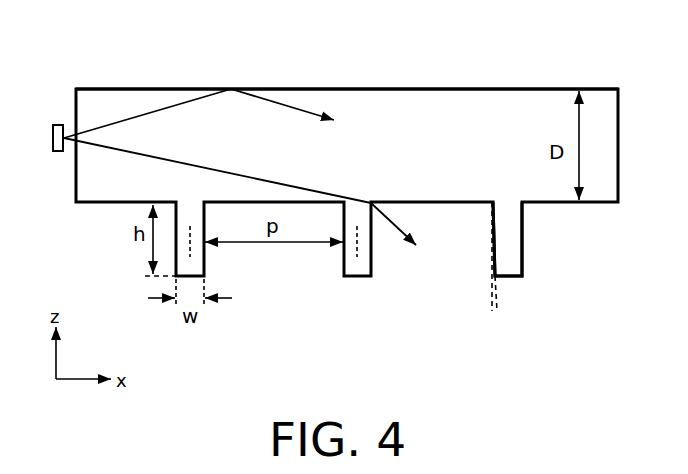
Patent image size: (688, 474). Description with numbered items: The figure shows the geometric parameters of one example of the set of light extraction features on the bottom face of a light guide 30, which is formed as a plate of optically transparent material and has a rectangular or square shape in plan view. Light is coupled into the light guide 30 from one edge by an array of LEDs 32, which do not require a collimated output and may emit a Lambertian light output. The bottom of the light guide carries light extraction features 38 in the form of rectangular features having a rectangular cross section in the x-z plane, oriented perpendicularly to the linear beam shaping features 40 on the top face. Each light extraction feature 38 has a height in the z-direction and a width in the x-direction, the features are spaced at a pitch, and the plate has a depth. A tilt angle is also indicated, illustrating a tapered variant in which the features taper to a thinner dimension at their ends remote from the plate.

The light guide 30 is at (99, 204).
The LEDs 32 is at (56, 121).
The light extraction features 38 is at (322, 87).
The linear beam shaping features 40 is at (519, 279).